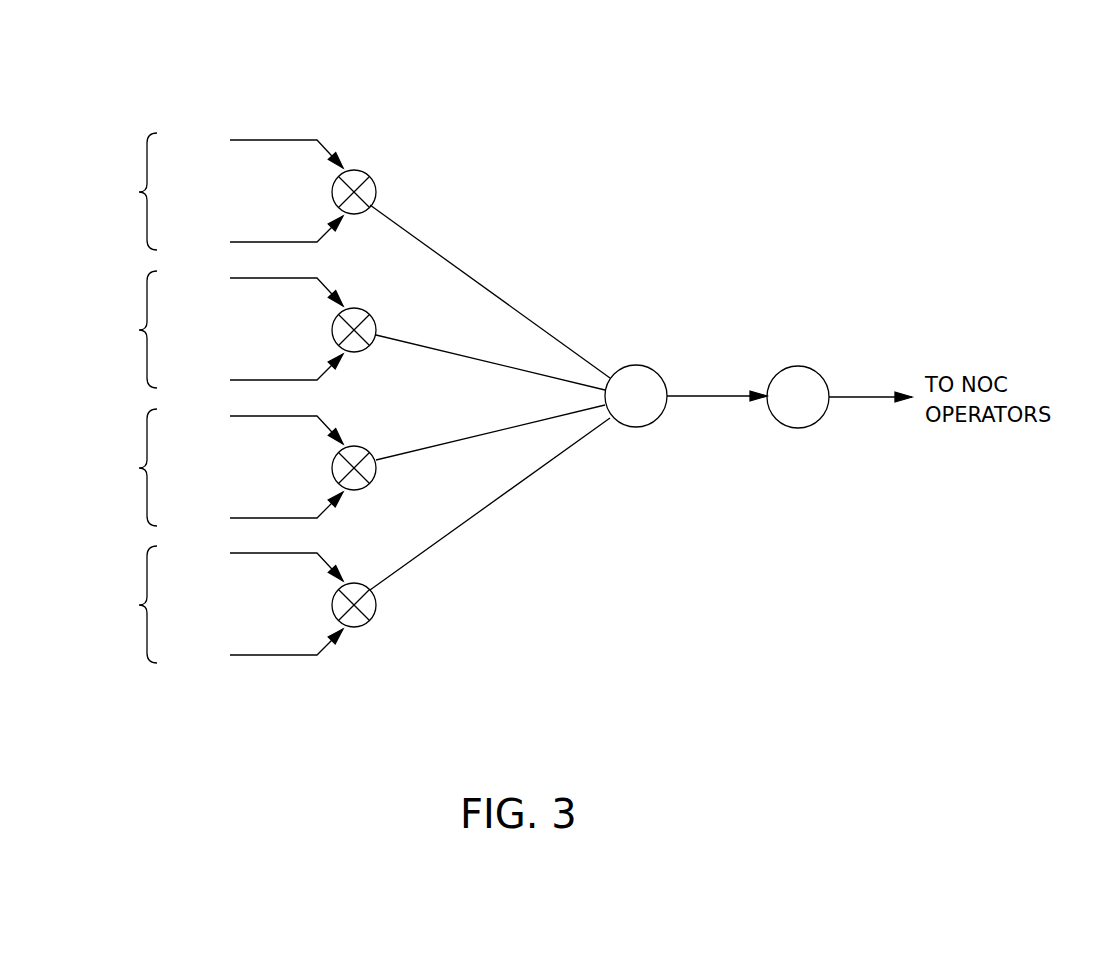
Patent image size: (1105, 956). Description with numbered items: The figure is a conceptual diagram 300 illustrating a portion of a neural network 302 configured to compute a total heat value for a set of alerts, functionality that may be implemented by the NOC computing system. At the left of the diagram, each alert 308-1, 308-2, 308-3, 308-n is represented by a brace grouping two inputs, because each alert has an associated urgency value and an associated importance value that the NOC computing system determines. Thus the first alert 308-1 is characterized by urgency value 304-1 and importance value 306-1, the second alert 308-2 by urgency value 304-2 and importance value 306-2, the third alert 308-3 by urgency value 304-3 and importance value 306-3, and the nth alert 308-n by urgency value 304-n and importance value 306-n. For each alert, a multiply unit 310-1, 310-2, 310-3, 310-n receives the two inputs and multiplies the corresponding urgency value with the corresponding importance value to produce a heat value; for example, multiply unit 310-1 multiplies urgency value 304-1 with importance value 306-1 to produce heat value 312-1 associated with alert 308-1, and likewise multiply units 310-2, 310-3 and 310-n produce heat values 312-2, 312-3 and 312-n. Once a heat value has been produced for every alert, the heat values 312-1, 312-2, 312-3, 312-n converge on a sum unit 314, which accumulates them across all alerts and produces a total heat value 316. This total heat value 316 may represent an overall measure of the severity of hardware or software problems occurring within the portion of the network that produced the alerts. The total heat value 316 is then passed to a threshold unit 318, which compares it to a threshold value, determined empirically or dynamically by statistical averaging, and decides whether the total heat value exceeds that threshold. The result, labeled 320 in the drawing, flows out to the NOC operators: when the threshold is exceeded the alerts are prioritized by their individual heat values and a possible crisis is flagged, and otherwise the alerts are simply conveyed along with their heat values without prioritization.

The conceptual diagram 300 is at (838, 100).
The portion of a neural network 302 is at (667, 500).
The urgency value 304-1 is at (250, 148).
The urgency value 304-2 is at (250, 286).
The urgency value 304-3 is at (250, 424).
The urgency value 304-n is at (250, 561).
The importance value 306-1 is at (250, 235).
The importance value 306-2 is at (250, 373).
The importance value 306-3 is at (250, 511).
The importance value 306-n is at (250, 648).
The alert 308-1 is at (139, 192).
The alert 308-2 is at (139, 330).
The alert 308-3 is at (139, 468).
The alert 308-n is at (139, 605).
The multiply unit 310-1 is at (358, 170).
The multiply unit 310-2 is at (358, 308).
The multiply unit 310-3 is at (358, 446).
The multiply unit 310-n is at (358, 583).
The heat value 312-1 is at (483, 284).
The heat value 312-2 is at (449, 351).
The heat value 312-3 is at (463, 438).
The heat value 312-n is at (451, 531).
The sum unit 314 is at (637, 364).
The total heat value 316 is at (715, 398).
The threshold unit 318 is at (800, 365).
The output signal to NOC operators 320 is at (853, 398).